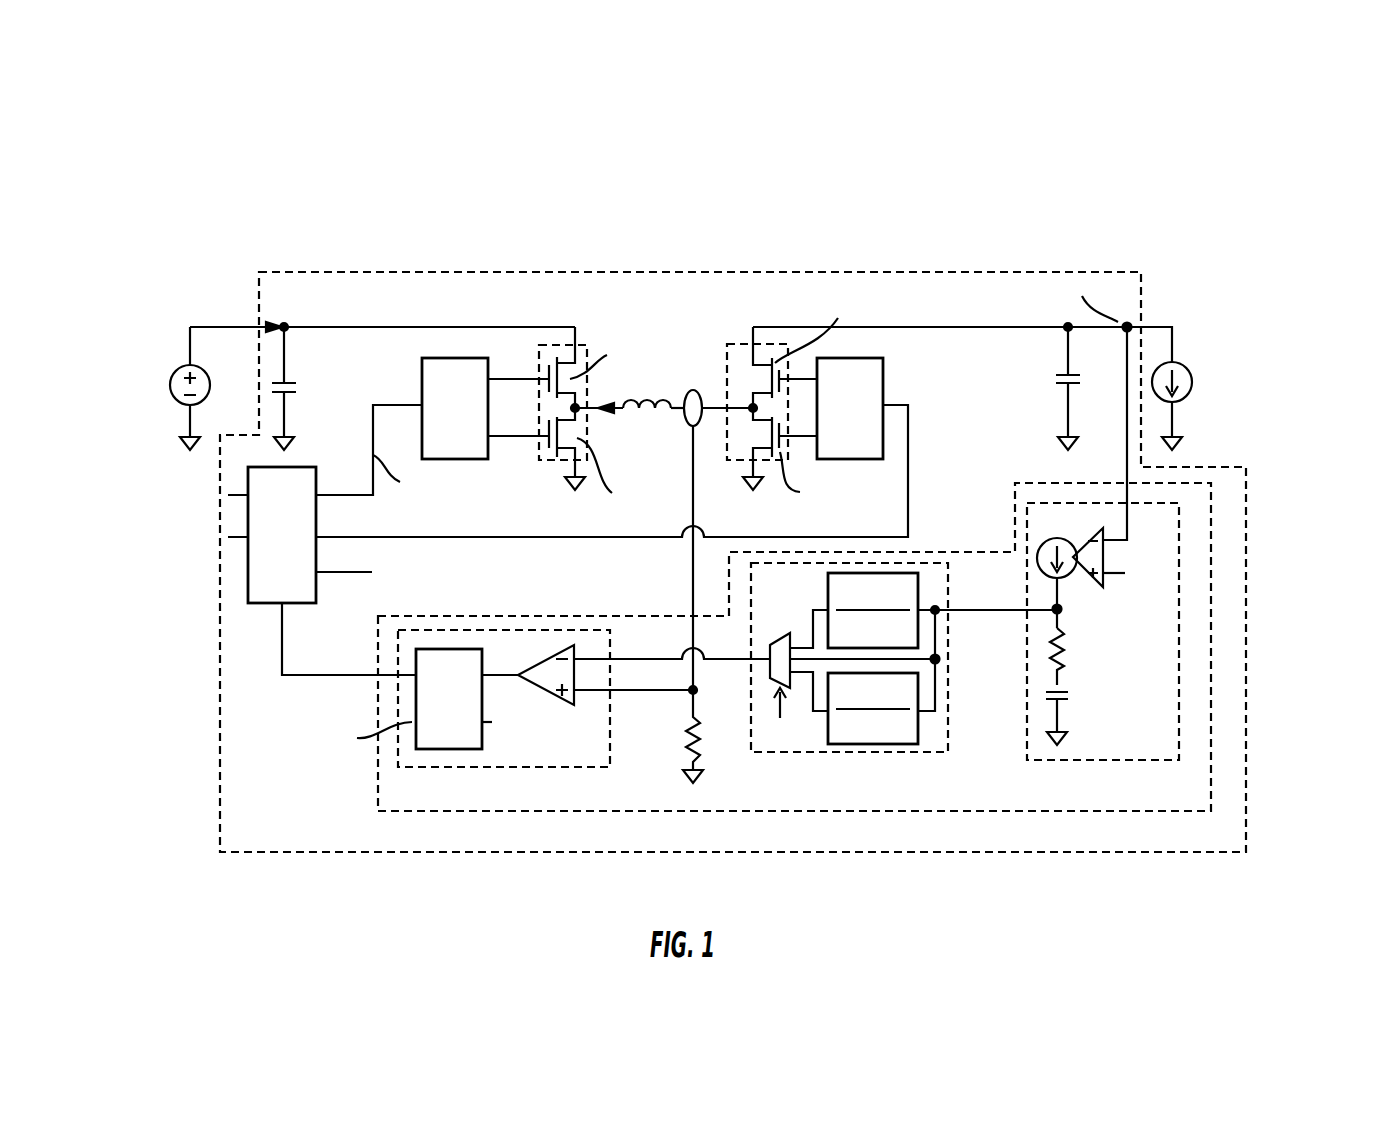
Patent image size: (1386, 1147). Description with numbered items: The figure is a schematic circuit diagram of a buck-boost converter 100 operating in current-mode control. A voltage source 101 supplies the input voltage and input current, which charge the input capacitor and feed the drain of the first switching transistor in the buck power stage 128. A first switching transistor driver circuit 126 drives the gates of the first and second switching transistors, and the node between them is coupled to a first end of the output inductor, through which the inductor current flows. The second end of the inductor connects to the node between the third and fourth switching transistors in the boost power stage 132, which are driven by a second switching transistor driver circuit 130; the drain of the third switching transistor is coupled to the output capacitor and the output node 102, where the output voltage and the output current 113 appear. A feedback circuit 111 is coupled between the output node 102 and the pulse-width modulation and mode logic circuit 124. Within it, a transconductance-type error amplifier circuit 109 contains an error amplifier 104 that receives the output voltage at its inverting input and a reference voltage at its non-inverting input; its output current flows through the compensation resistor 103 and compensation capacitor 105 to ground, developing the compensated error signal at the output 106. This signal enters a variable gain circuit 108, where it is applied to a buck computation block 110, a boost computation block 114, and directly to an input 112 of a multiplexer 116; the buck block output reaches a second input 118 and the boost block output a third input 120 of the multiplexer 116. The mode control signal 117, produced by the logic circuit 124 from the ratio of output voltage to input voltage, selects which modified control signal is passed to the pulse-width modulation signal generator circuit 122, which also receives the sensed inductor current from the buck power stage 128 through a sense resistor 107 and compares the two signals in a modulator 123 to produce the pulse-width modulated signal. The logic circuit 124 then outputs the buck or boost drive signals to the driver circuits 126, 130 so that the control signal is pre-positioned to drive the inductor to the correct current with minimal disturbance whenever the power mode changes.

The buck-boost converter 100 is at (983, 272).
The voltage source 101 is at (172, 372).
The output node 102 is at (1127, 327).
The resistor RC 103 is at (1100, 645).
The error amplifier 104 is at (1103, 531).
The capacitor CC 105 is at (1103, 705).
The output of the error amplifier 106 is at (1055, 608).
The input resistor 107 is at (669, 750).
The variable gain circuit 108 is at (926, 694).
The transconductance-type error amplifier circuit 109 is at (1169, 646).
The buck computation block 110 is at (1012, 433).
The feedback circuit 111 is at (1157, 811).
The input of the variable gain circuit 112 is at (974, 657).
The output current IO 113 is at (1183, 365).
The boost computation block 114 is at (915, 735).
The multiplexer 116 is at (770, 680).
The control signal MODE 117 is at (430, 572).
The second input of the multiplexer 118 is at (790, 648).
The third input of the multiplexer 120 is at (793, 680).
The PWM signal generator circuit 122 is at (803, 694).
The modulator 123 is at (323, 757).
The PWM and mode logic circuit 124 is at (250, 603).
The first switching transistor driver circuit 126 is at (432, 370).
The buck power stage 128 is at (597, 272).
The second switching transistor driver circuit 130 is at (878, 368).
The boost power stage 132 is at (798, 272).